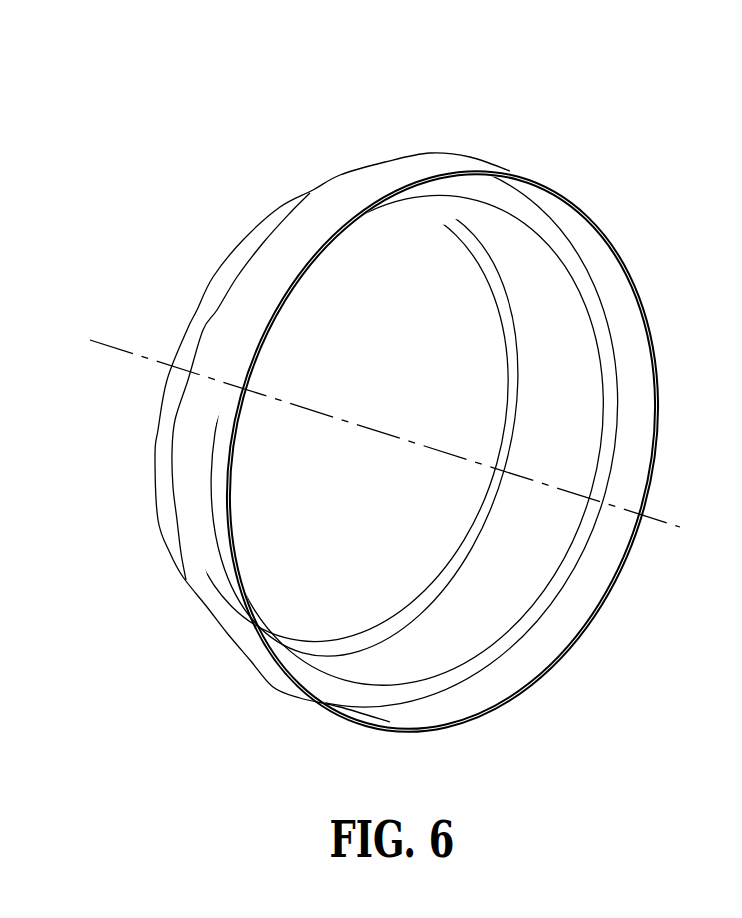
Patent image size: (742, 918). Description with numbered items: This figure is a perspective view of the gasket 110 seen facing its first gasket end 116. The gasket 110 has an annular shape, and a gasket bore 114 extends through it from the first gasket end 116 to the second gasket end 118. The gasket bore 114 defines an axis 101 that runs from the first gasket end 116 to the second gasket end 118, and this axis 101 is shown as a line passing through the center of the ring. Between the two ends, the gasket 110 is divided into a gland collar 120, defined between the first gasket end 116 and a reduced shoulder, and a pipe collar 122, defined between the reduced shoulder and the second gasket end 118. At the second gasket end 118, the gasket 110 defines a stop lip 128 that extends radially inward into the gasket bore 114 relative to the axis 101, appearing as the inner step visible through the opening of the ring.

The gasket 110 is at (315, 64).
The axis 101 is at (658, 528).
The first gasket end 116 is at (630, 273).
The pipe collar 122 is at (198, 310).
The gland collar 120 is at (252, 668).
The second gasket end 118 is at (503, 413).
The gasket bore 114 is at (375, 645).
The stop lip 128 is at (443, 573).